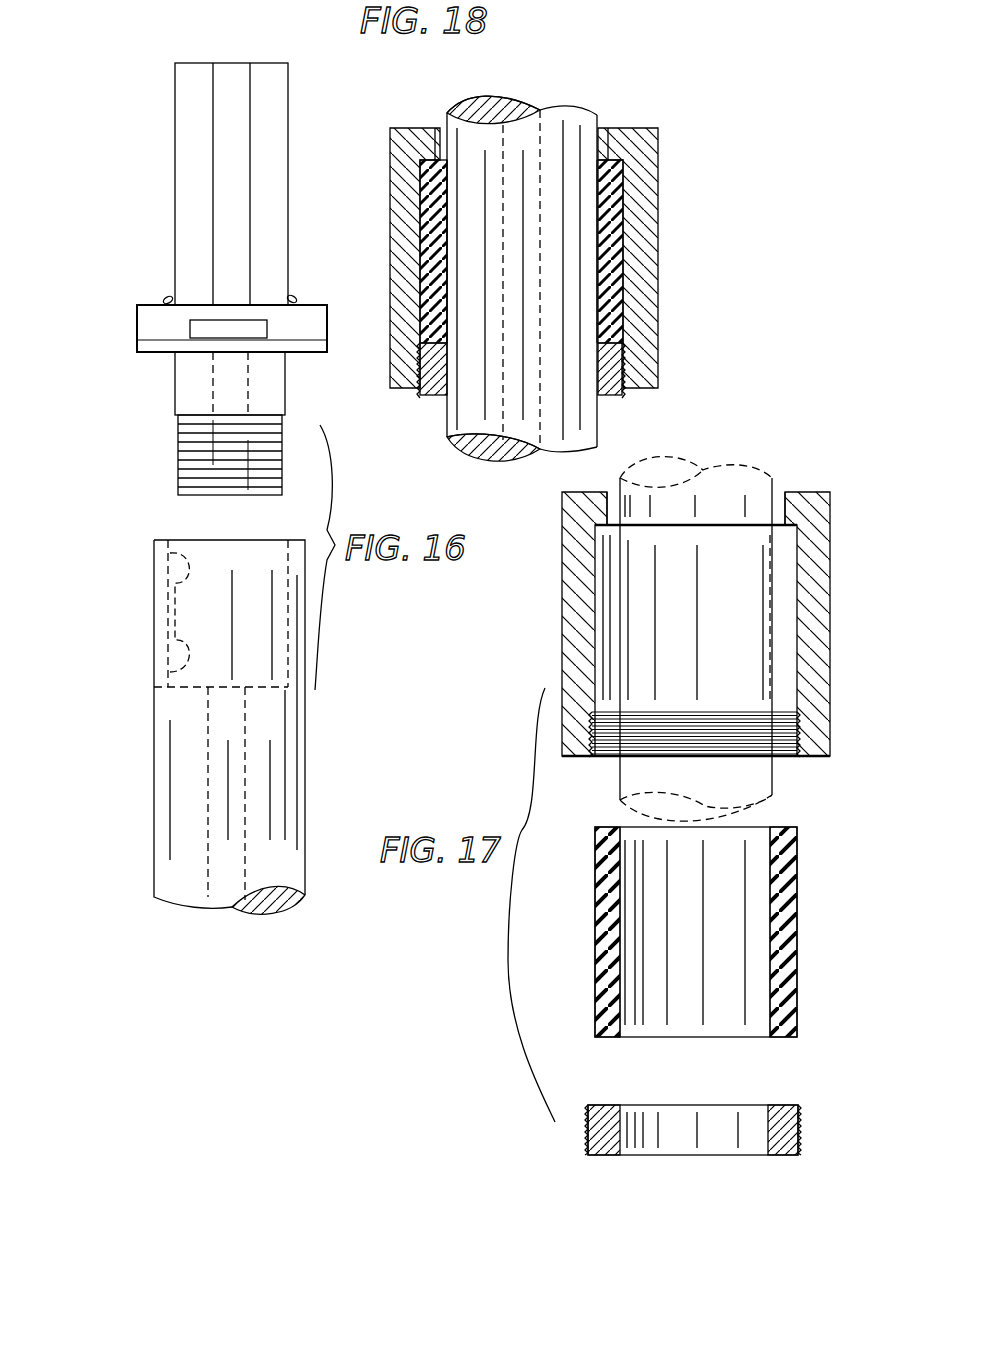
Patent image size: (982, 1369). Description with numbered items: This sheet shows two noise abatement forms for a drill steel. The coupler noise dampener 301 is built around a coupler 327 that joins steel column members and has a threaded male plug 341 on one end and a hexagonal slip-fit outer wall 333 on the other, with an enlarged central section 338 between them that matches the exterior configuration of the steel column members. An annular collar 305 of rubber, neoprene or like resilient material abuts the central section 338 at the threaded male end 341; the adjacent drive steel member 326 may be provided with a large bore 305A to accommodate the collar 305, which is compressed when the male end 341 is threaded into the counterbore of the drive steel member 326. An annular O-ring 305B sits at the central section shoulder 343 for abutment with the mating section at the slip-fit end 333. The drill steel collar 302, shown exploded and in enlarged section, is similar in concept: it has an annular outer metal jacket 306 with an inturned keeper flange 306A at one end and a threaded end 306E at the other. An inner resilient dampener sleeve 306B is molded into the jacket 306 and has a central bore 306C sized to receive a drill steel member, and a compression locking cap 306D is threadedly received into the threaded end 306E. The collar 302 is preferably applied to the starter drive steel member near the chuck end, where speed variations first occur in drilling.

In FIG. 16, the coupler noise dampener 301 is at (214, 407).
In FIG. 18, the drill steel collar 302 is at (583, 228).
In FIG. 17, the drill steel collar 302 is at (716, 832).
In FIG. 16, the annular collar 305 is at (175, 386).
In FIG. 16, the large bore 305A is at (153, 558).
In FIG. 16, the annular O-ring 305B is at (292, 296).
In FIG. 18, the annular outer metal jacket 306 is at (500, 217).
In FIG. 17, the annular outer metal jacket 306 is at (751, 603).
In FIG. 18, the inturned keeper flange 306A is at (415, 128).
In FIG. 17, the inturned keeper flange 306A is at (830, 492).
In FIG. 18, the inner resilient dampener sleeve 306B is at (640, 218).
In FIG. 17, the inner resilient dampener sleeve 306B is at (785, 1005).
In FIG. 18, the central bore 306C is at (598, 275).
In FIG. 17, the central bore 306C is at (770, 940).
In FIG. 18, the compression locking cap 306D is at (612, 384).
In FIG. 17, the compression locking cap 306D is at (585, 1137).
In FIG. 17, the threaded end 306E is at (790, 715).
In FIG. 16, the drive steel member 326 is at (173, 727).
In FIG. 18, the drive steel member 326 is at (607, 119).
In FIG. 17, the drive steel member 326 is at (780, 480).
In FIG. 16, the coupler 327 is at (122, 306).
In FIG. 16, the hexagonal slip-fit outer wall 333 is at (175, 176).
In FIG. 16, the enlarged central section 338 is at (137, 332).
In FIG. 16, the threaded male plug 341 is at (178, 432).
In FIG. 16, the central section shoulder 343 is at (298, 302).